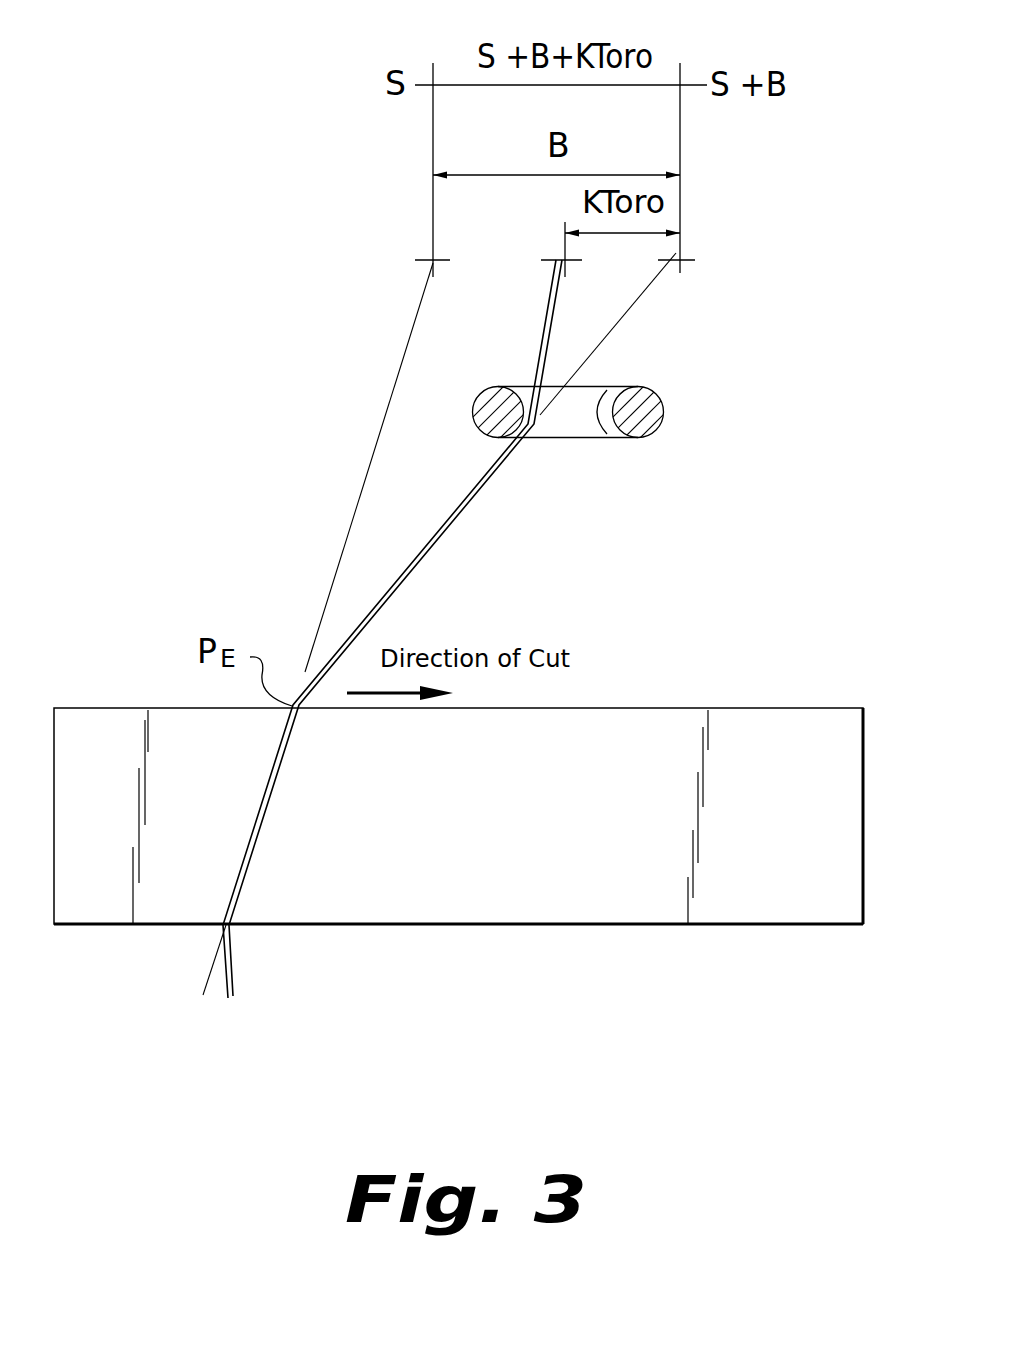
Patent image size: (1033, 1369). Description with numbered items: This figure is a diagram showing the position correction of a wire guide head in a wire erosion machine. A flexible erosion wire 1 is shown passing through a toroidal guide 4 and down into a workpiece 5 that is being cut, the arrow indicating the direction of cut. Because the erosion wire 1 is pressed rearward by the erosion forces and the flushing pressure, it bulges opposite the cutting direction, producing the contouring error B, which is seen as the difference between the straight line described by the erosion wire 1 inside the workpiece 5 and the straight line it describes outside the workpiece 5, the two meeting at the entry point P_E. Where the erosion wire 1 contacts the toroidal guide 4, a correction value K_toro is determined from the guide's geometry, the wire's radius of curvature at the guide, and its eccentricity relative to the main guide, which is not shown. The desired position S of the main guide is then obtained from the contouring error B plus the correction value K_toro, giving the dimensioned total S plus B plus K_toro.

The erosion wire 1 is at (437, 542).
The toroidal guide 4 is at (684, 382).
The workpiece 5 is at (780, 708).